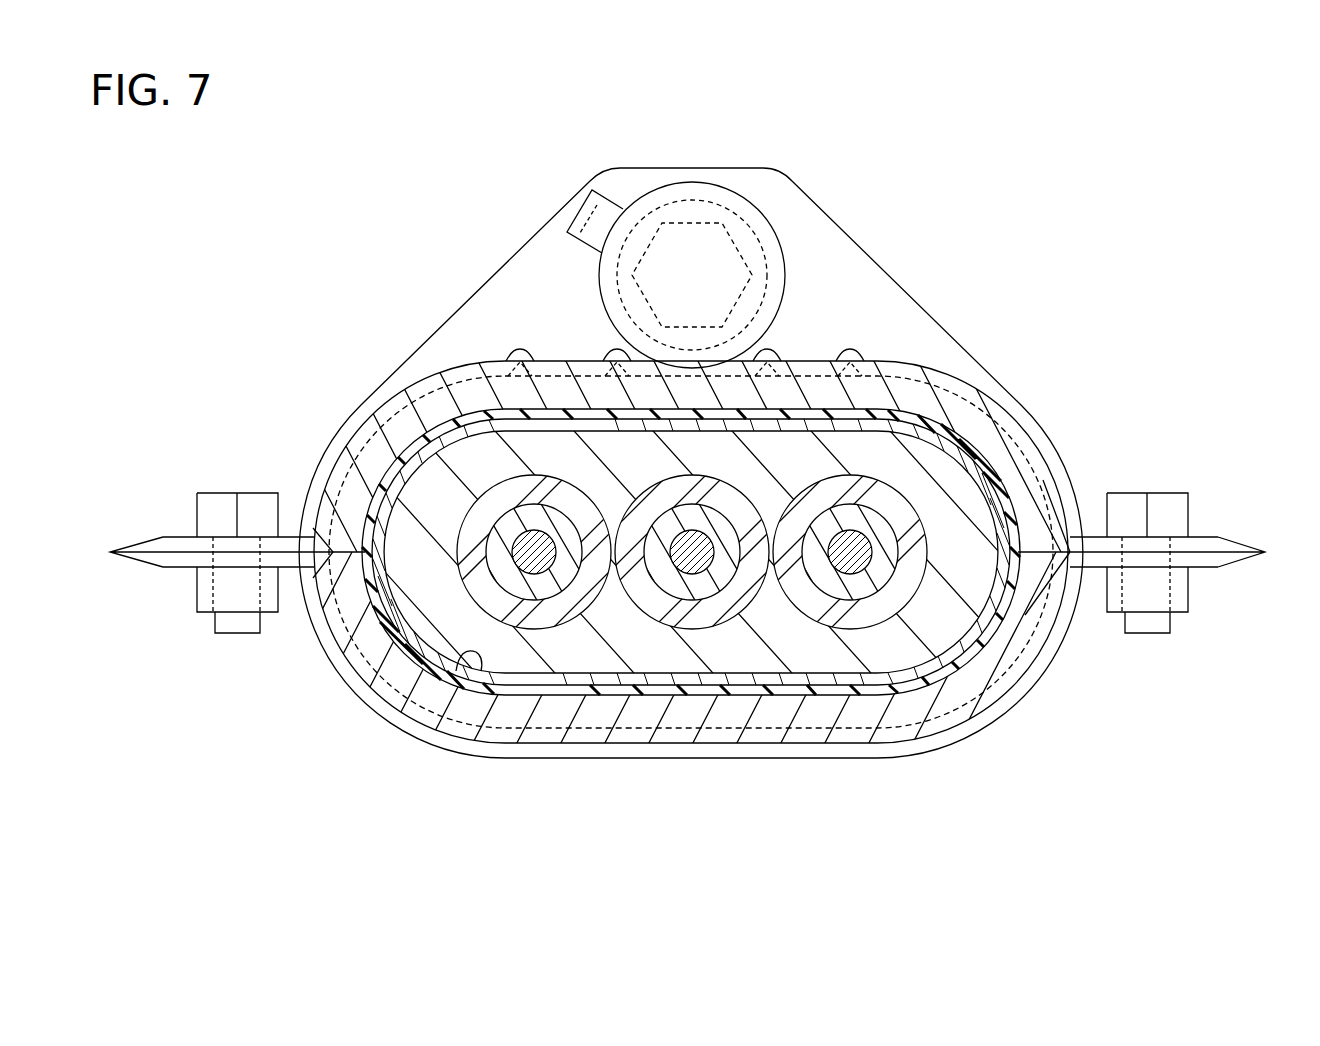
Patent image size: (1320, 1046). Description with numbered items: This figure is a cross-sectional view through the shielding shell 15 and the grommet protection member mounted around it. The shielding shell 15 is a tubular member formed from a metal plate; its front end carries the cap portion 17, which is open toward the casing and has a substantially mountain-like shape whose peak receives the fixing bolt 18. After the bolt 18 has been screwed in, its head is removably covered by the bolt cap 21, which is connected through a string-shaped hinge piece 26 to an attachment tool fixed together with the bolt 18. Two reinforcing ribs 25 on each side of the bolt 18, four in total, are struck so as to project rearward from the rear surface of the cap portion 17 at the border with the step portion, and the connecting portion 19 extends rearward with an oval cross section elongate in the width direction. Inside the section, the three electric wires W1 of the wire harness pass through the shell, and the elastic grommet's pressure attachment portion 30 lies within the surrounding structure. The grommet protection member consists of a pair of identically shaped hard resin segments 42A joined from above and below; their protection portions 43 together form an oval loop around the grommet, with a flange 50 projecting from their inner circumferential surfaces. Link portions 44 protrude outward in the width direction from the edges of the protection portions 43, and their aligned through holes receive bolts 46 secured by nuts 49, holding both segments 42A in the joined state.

The shielding shell 15 is at (691, 463).
The cap portion 17 is at (922, 330).
The fixing bolt 18 is at (710, 256).
The connecting portion 19 is at (470, 670).
The bolt cap 21 is at (691, 192).
The reinforcing ribs 25 is at (612, 350).
The string-shaped hinge piece 26 is at (590, 192).
The pressure attachment portion 30 is at (418, 657).
The segments 42A is at (348, 455).
The protection portion 43 is at (962, 378).
The link portions 44 is at (684, 552).
The bolt 46 is at (216, 505).
The nut 49 is at (205, 601).
The flange 50 is at (408, 418).
The electric wires W1 is at (534, 560).